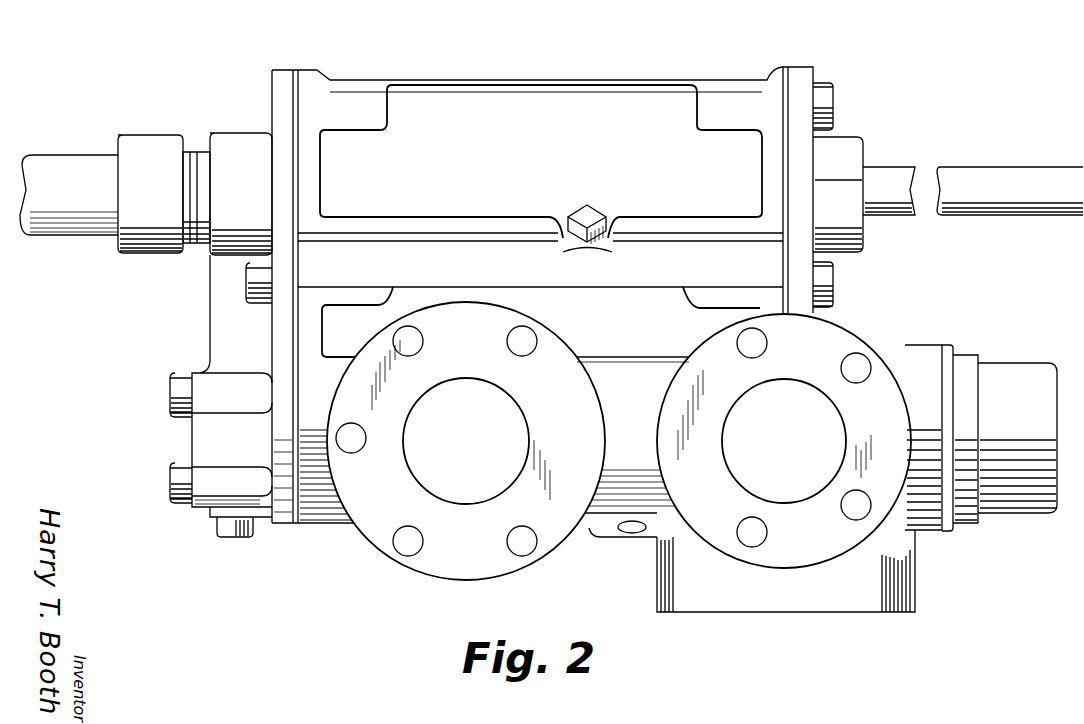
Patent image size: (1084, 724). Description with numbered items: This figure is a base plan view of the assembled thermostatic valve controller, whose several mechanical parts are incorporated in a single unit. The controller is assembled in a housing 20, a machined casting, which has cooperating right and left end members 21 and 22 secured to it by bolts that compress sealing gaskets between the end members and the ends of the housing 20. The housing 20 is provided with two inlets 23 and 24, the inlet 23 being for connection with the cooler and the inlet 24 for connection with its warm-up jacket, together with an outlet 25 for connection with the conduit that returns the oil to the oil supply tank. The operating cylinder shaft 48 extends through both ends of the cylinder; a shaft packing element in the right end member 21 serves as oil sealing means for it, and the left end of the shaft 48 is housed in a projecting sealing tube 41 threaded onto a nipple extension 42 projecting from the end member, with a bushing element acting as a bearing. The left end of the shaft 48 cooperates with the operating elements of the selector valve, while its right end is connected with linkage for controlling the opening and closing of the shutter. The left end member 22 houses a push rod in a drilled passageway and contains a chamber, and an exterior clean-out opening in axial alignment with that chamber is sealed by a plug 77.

The housing 20 is at (573, 90).
The right end member 21 is at (815, 72).
The left end member 22 is at (283, 70).
The inlet 23 is at (803, 451).
The inlet 24 is at (488, 453).
The outlet 25 is at (827, 612).
The sealing tube 41 is at (45, 165).
The nipple extension 42 is at (202, 152).
The shaft 48 is at (1005, 162).
The plug 77 is at (241, 537).